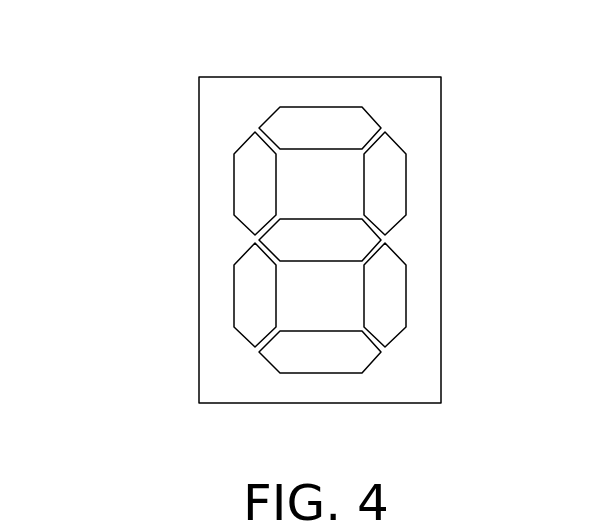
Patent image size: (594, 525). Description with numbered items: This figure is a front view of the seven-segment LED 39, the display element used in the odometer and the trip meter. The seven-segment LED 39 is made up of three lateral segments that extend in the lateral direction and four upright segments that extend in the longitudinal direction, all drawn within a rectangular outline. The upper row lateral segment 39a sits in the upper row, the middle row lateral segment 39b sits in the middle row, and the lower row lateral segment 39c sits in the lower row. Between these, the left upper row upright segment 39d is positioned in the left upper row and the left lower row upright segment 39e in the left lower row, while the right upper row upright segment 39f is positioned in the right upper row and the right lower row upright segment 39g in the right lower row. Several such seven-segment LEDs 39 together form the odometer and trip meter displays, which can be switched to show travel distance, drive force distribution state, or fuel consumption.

The seven-segment LED 39 is at (441, 101).
The upper row lateral segment 39a is at (319, 125).
The middle row lateral segment 39b is at (330, 227).
The lower row lateral segment 39c is at (315, 350).
The left upper row upright segment 39d is at (245, 192).
The left lower row upright segment 39e is at (243, 297).
The right upper row upright segment 39f is at (392, 165).
The right lower row upright segment 39g is at (392, 295).